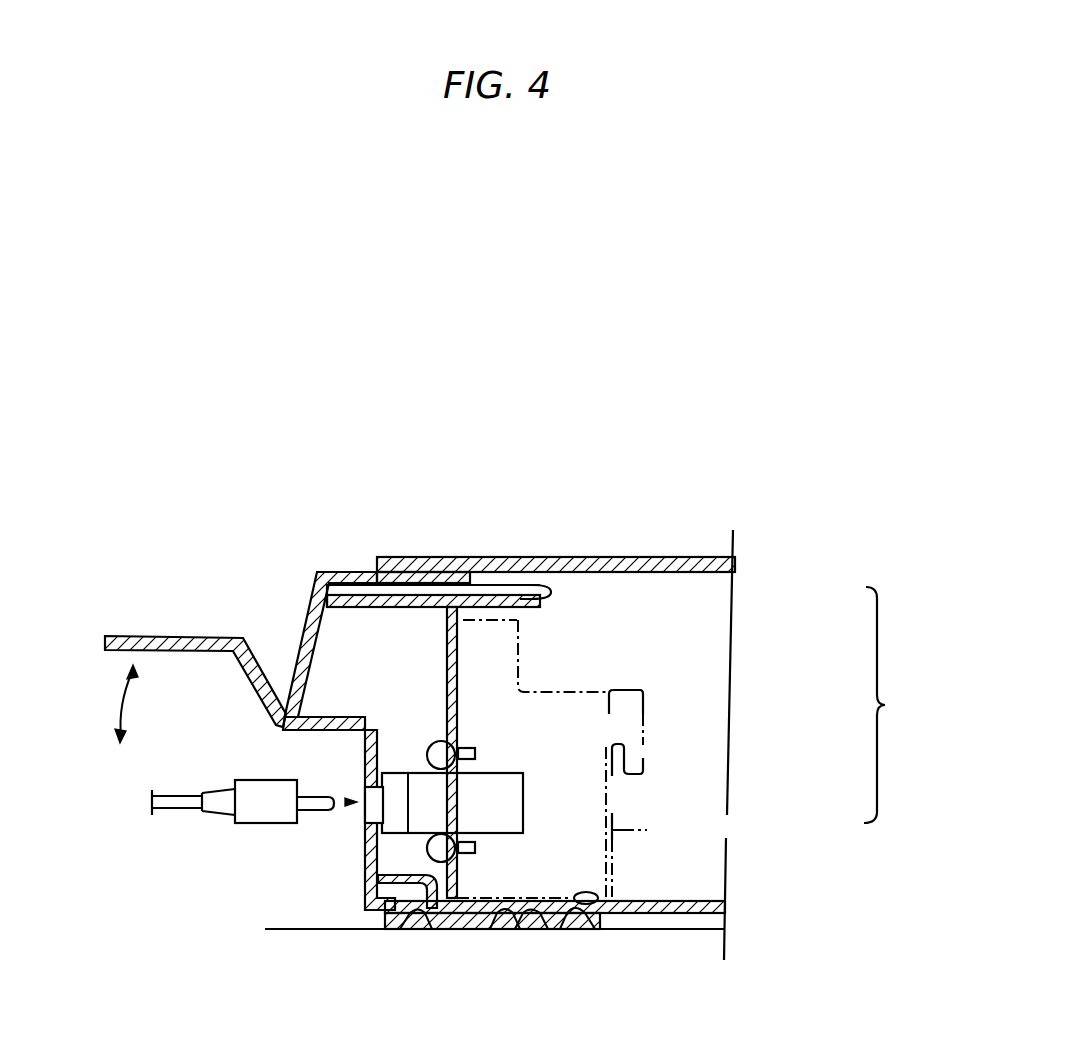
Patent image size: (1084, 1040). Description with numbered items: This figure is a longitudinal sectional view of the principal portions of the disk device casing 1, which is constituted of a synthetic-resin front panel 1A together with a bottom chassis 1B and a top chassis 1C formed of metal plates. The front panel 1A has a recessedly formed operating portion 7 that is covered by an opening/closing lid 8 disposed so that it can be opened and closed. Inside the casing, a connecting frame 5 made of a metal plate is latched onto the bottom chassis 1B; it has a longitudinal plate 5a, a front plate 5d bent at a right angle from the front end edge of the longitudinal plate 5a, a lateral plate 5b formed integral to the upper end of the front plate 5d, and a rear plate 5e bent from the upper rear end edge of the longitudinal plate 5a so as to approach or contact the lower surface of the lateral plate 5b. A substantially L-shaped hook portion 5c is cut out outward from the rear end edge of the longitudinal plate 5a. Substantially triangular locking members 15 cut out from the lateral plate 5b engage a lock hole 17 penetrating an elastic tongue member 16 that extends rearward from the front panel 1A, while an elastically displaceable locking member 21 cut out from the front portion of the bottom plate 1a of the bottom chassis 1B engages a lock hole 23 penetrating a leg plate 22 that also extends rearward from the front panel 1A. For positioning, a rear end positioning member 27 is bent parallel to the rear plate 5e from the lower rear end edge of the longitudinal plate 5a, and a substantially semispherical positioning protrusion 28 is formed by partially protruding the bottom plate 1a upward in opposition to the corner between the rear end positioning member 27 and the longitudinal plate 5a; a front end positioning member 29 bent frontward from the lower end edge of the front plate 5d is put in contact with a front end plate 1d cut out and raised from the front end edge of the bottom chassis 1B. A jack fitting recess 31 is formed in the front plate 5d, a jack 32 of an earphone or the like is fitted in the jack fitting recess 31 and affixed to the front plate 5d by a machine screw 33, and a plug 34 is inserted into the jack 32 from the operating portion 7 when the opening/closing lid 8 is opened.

The casing 1 is at (563, 546).
The front panel 1A is at (309, 586).
The bottom chassis 1B is at (672, 917).
The top chassis 1C is at (665, 558).
The bottom plate 1a is at (728, 911).
The front end plate 1d is at (387, 908).
The connecting frame 5 is at (687, 705).
The longitudinal plate 5a is at (646, 698).
The lateral plate 5b is at (552, 605).
The hook portion 5c is at (643, 758).
The front plate 5d is at (459, 668).
The rear plate 5e is at (607, 670).
The operating portion 7 is at (327, 870).
The opening/closing lid 8 is at (176, 636).
The locking member 15 is at (510, 590).
The elastic tongue member 16 is at (358, 608).
The lock hole 17 is at (498, 598).
The locking member 21 is at (527, 930).
The leg plate 22 is at (580, 930).
The lock hole 23 is at (505, 930).
The rear end positioning member 27 is at (647, 830).
The positioning protrusion 28 is at (586, 892).
The front end positioning member 29 is at (425, 930).
The jack fitting recess 31 is at (460, 835).
The jack 32 is at (367, 810).
The machine screw 33 is at (430, 845).
The plug 34 is at (272, 800).